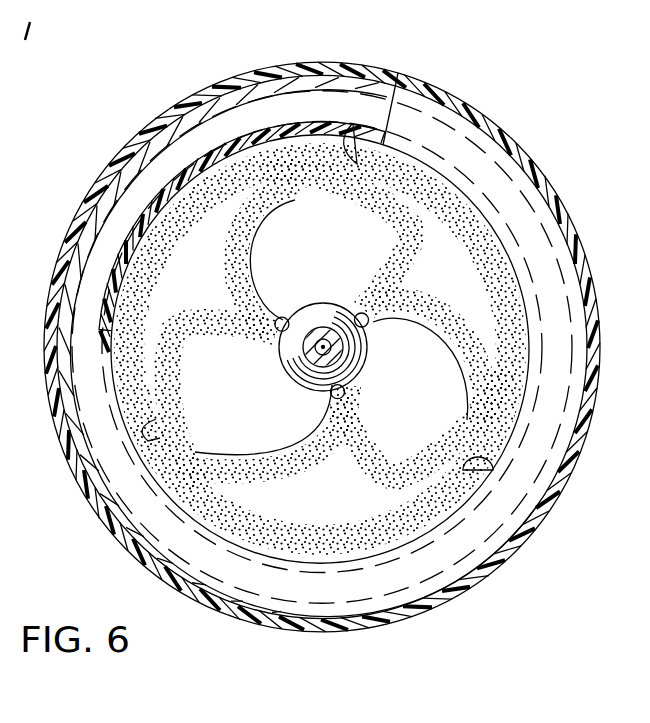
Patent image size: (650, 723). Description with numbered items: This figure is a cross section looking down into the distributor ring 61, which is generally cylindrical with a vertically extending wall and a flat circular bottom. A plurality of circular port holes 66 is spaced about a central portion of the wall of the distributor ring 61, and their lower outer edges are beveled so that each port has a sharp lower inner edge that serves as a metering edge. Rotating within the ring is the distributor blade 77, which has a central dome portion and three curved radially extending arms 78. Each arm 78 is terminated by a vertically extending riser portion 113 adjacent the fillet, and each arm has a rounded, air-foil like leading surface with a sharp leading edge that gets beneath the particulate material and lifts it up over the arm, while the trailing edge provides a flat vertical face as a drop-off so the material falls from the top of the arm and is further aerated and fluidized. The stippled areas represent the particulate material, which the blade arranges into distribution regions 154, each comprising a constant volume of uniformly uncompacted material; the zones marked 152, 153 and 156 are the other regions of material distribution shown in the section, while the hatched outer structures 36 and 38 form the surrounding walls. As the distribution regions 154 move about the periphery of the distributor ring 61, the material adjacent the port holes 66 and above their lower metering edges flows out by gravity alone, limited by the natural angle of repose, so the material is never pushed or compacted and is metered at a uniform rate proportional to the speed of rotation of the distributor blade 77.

The outer drum shell 36 is at (390, 71).
The drum liner wall 38 is at (238, 93).
The distributor ring 61 is at (493, 127).
The port holes 66 is at (181, 181).
The distributor blade 77 is at (316, 318).
The curved radially extending arms 78 is at (266, 228).
The riser portion 113 is at (356, 127).
The clear cavity zone 152 is at (278, 263).
The material band along arm 153 is at (198, 279).
The distribution regions 154 is at (286, 176).
The spiral material band 156 is at (423, 212).